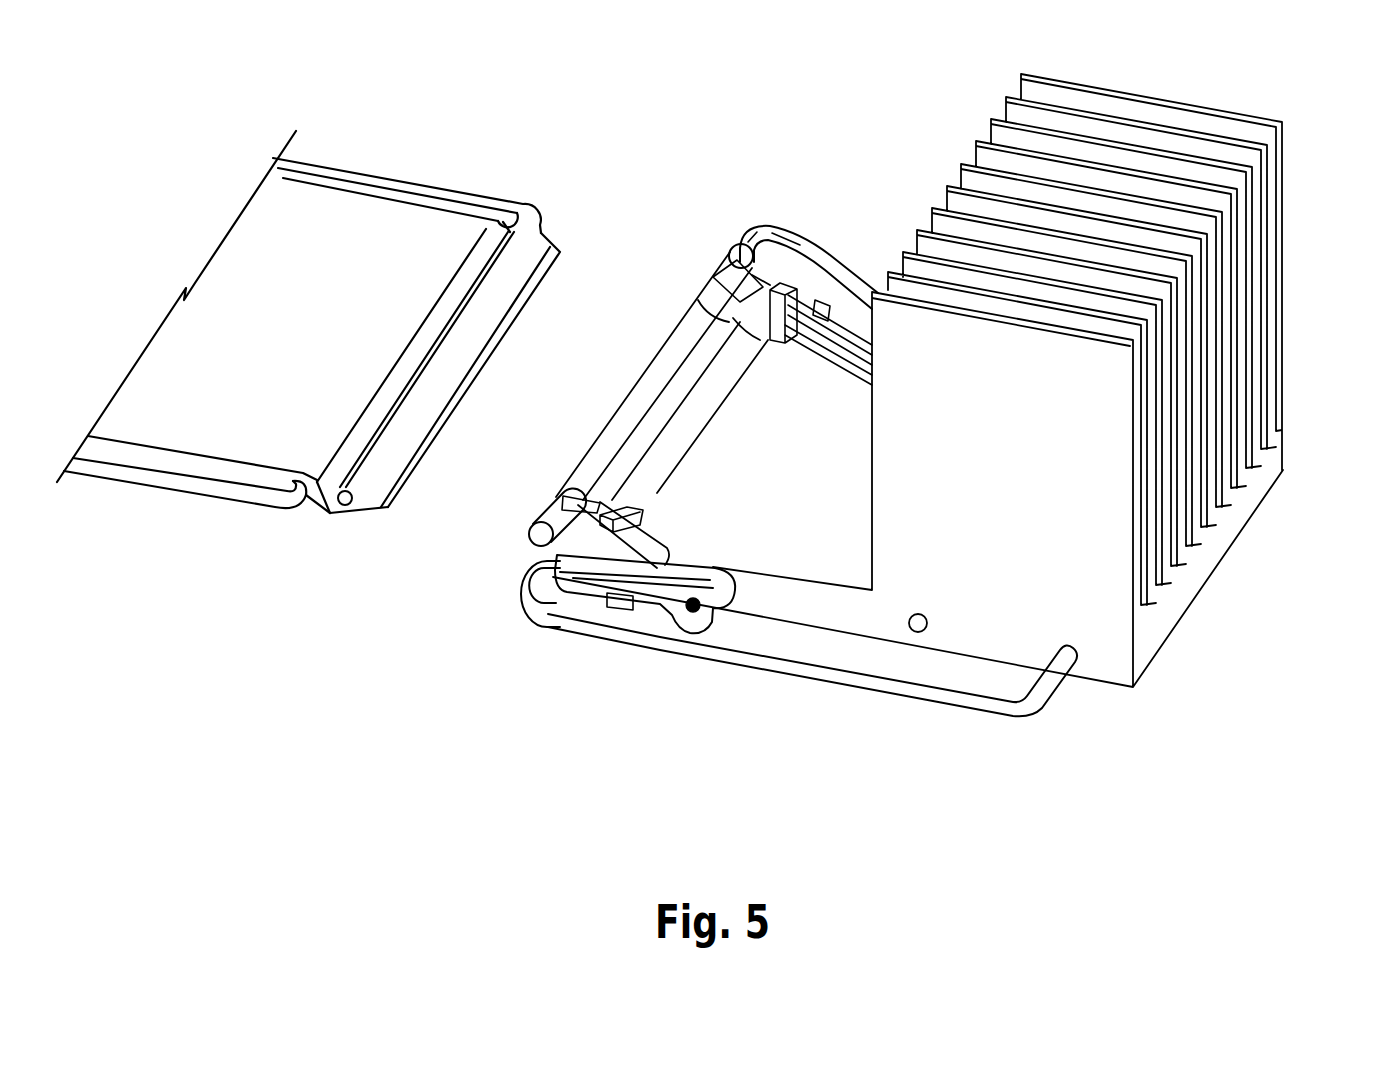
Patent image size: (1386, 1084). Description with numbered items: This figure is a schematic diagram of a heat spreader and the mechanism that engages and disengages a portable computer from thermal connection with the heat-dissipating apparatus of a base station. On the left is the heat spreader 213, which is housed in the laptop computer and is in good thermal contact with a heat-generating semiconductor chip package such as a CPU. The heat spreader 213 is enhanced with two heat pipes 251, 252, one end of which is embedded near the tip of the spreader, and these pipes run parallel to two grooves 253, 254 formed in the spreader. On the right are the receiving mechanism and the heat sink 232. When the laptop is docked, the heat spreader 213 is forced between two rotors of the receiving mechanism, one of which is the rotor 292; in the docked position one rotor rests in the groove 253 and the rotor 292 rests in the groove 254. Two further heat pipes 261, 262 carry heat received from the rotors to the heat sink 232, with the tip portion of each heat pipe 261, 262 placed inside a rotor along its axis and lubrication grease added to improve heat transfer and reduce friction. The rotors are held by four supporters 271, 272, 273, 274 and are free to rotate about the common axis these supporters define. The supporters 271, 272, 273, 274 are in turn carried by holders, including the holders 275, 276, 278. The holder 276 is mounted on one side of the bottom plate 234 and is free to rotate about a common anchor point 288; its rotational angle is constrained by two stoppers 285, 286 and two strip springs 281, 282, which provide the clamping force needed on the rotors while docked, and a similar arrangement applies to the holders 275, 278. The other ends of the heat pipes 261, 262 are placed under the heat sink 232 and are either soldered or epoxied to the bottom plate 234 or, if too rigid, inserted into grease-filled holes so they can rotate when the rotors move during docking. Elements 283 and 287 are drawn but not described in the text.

The heat spreader 213 is at (313, 210).
The heat pipe 252 is at (418, 185).
The groove 253 is at (497, 228).
The heat pipe 251 is at (216, 492).
The groove 254 is at (325, 510).
The heat sink 232 is at (1288, 128).
The bottom plate 234 is at (843, 620).
The heat pipe 261 is at (965, 705).
The supporter 273 is at (533, 562).
The supporter 271 is at (738, 250).
The heat pipe 262 is at (783, 228).
The common anchor point 288 is at (700, 612).
The strip spring 281 is at (640, 612).
The stopper 285 is at (610, 607).
The supporter 272 is at (529, 533).
The holder 276 is at (570, 510).
The strip spring 282 is at (650, 500).
The stopper 286 is at (610, 500).
The rotor 292 is at (663, 400).
The supporter 274 is at (697, 283).
The holder 275 is at (742, 230).
The bracket 287 is at (725, 270).
The block 283 is at (793, 285).
The holder 278 is at (838, 330).